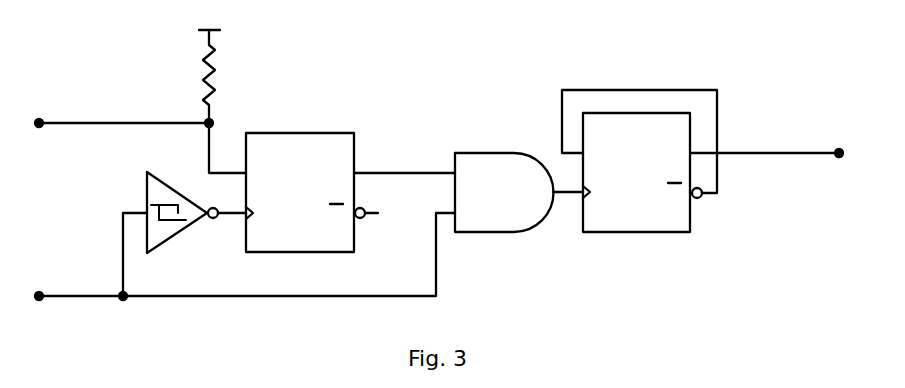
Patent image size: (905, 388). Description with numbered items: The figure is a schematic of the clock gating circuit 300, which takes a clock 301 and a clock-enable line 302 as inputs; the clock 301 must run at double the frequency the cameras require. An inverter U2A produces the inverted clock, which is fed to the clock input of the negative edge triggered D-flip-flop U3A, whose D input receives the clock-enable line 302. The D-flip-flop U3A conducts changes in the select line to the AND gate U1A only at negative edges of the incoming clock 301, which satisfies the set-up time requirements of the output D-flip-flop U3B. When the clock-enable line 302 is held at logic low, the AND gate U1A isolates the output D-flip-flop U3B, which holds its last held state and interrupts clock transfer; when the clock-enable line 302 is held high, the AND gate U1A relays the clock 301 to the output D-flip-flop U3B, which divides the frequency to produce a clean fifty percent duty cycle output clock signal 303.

The clock gating circuit 300 is at (441, 97).
The clock 301 is at (42, 294).
The clock-enable line 302 is at (42, 121).
The output clock signal 303 is at (836, 151).
The AND gate U1A is at (455, 153).
The inverter U2A is at (146, 173).
The negative edge triggered D-flip-flop U3A is at (354, 252).
The output D-flip-flop U3B is at (690, 232).